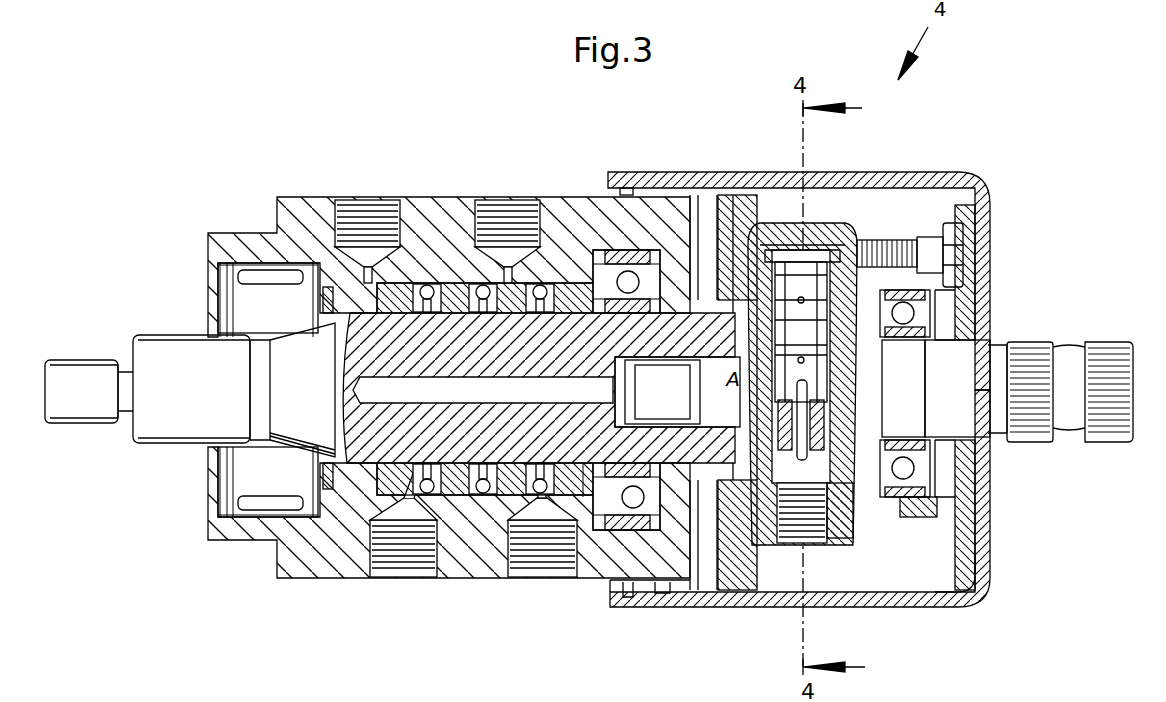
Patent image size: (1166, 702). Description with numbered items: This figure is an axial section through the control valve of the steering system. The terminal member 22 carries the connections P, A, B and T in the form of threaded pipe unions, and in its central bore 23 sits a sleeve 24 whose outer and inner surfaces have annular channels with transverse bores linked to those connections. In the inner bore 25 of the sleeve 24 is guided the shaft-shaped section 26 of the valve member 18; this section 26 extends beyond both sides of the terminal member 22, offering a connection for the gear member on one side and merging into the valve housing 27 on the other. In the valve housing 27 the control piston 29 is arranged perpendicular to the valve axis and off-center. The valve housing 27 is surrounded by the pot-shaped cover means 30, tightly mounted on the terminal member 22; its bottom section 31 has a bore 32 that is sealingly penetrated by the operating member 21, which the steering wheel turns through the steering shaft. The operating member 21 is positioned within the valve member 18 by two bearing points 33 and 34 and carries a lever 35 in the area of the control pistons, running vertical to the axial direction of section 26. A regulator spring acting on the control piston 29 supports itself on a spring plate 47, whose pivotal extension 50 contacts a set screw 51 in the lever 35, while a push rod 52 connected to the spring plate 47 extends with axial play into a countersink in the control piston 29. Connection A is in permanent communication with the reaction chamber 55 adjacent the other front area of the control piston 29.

The valve member 18 is at (205, 398).
The operating member 21 is at (972, 367).
The terminal member 22 is at (442, 223).
The central bore 23 is at (583, 277).
The sleeve 24 is at (463, 495).
The inner bore 25 is at (583, 497).
The shaft-shaped section 26 is at (539, 388).
The valve housing 27 is at (753, 207).
The control piston 29 is at (801, 332).
The pot-shaped cover means 30 is at (642, 173).
The bottom section 31 is at (983, 540).
The bore 32 is at (962, 300).
The bearing point 33 is at (680, 530).
The bearing point 34 is at (950, 243).
The lever 35 is at (852, 528).
The spring plate 47 is at (973, 585).
The pivotal extension 50 is at (797, 444).
The set screw 51 is at (795, 545).
The push rod 52 is at (912, 462).
The reaction chamber 55 is at (857, 247).